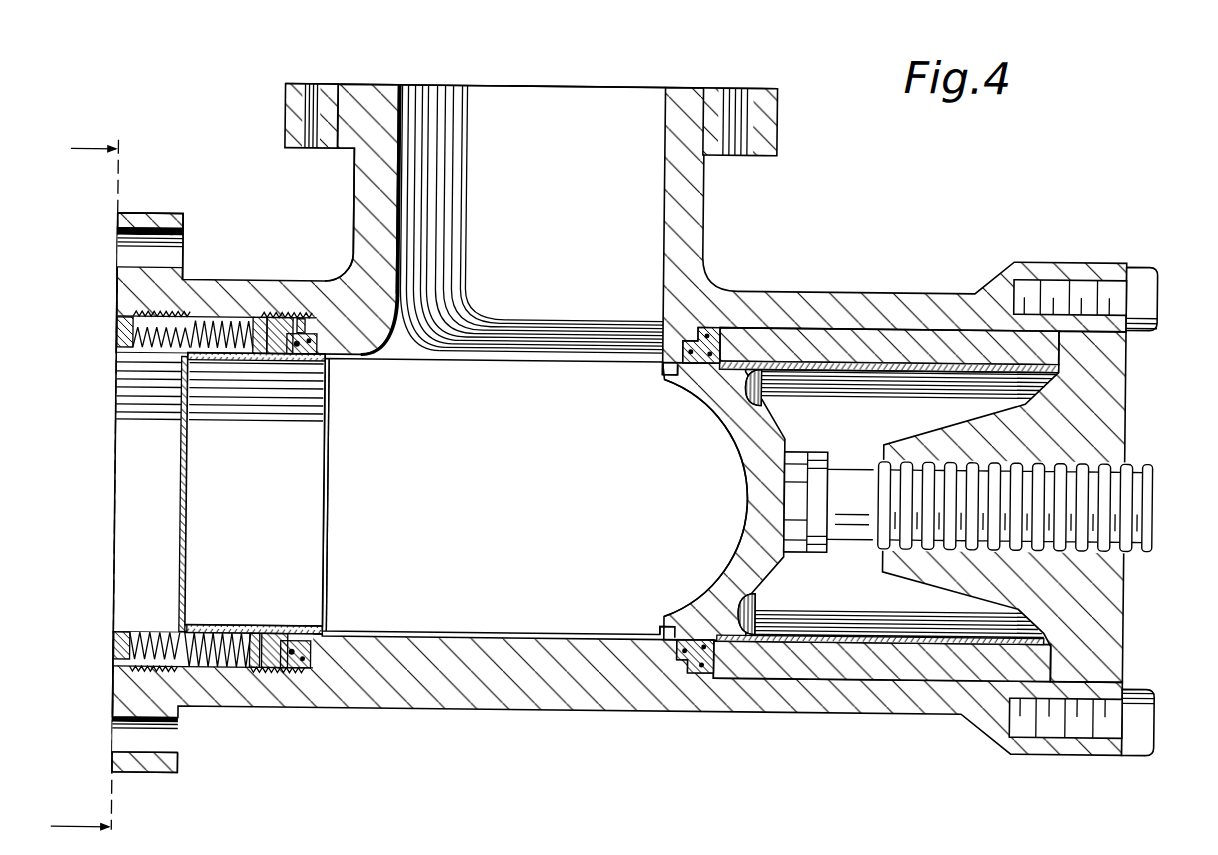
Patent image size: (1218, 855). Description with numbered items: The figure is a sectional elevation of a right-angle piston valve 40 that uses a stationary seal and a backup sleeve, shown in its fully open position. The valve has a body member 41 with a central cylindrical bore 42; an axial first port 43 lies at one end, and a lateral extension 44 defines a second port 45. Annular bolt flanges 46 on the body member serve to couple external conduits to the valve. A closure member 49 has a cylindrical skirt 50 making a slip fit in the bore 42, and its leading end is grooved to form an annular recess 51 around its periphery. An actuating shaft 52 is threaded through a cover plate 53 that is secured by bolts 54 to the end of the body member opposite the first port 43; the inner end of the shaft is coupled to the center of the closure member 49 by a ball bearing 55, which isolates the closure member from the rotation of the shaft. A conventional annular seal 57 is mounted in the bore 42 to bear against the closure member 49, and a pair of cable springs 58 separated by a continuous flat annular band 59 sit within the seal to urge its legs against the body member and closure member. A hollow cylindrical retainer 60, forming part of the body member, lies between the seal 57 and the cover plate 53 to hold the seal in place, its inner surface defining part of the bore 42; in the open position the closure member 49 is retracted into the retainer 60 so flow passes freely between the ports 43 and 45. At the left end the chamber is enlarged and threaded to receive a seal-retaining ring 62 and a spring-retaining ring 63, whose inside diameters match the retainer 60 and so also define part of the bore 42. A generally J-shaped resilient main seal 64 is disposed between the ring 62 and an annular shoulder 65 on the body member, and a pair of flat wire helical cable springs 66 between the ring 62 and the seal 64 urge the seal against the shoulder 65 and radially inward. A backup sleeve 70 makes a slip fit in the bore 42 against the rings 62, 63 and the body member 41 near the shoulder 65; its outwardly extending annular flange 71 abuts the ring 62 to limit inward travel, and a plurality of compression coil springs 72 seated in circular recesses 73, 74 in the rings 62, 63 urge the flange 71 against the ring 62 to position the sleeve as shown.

The piston valve 40 is at (160, 108).
The body member 41 is at (260, 284).
The cylindrical bore 42 is at (480, 362).
The first port 43 is at (114, 545).
The lateral extension 44 is at (359, 187).
The second port 45 is at (521, 238).
The annular bolt flanges 46 is at (280, 114).
The closure member 49 is at (661, 454).
The cylindrical skirt 50 is at (871, 367).
The annular recess 51 is at (661, 372).
The actuating shaft 52 is at (846, 465).
The cover plate 53 is at (1120, 377).
The bolts 54 is at (1151, 262).
The ball bearing 55 is at (820, 554).
The annular seal 57 is at (665, 368).
The cable springs 58 is at (695, 322).
The flat annular band 59 is at (656, 341).
The retainer 60 is at (801, 345).
The seal-retaining ring 62 is at (264, 384).
The spring-retaining ring 63 is at (123, 342).
The main seal 64 is at (288, 374).
The annular shoulder 65 is at (389, 317).
The flat wire helical cable springs 66 is at (303, 325).
The backup sleeve 70 is at (329, 480).
The annular flange 71 is at (258, 318).
The compression coil springs 72 is at (203, 378).
The circular recesses 73 is at (233, 381).
The circular recesses 74 is at (135, 345).